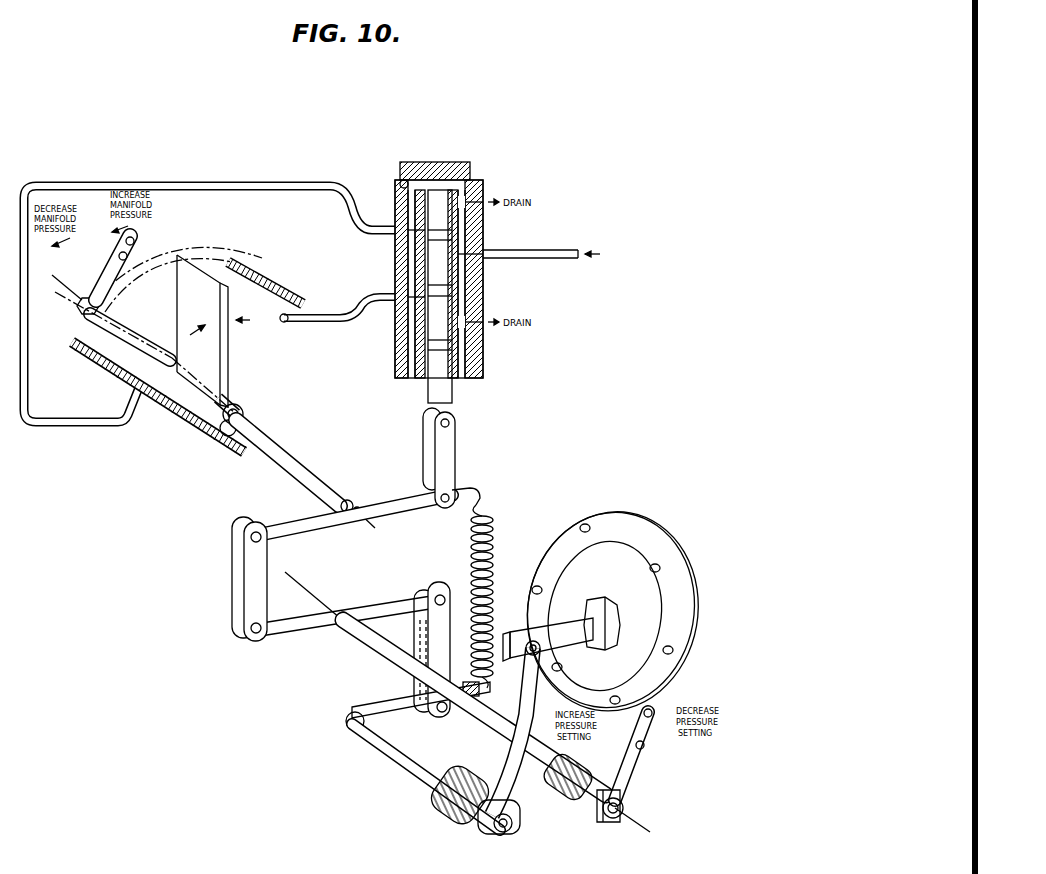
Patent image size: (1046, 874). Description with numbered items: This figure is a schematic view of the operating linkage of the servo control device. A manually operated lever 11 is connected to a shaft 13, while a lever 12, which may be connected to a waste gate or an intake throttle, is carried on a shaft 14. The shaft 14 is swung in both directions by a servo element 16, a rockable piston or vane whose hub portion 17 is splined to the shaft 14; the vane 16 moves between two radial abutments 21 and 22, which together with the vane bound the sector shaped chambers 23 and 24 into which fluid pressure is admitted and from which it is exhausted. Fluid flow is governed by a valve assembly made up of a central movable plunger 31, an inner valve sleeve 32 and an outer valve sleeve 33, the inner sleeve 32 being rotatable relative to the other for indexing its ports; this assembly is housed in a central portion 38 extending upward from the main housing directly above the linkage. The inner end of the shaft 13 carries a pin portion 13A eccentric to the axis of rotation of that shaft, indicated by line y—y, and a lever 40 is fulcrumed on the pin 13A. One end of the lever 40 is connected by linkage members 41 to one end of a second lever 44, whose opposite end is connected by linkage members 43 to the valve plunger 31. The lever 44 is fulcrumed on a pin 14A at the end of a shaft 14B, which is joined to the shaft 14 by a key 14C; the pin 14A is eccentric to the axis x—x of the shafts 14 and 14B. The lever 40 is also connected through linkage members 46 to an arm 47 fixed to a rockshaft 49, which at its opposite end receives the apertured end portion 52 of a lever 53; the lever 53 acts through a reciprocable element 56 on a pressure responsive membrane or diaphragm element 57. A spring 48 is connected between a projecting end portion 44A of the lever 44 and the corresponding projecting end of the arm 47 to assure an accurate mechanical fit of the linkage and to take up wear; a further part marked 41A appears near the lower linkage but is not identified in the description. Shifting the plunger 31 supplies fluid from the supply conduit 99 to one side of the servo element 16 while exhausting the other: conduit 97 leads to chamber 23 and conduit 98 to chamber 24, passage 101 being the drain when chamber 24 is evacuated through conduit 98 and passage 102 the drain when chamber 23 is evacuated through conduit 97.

The lever 11 is at (640, 748).
The lever 12 is at (106, 254).
The shaft 13 is at (488, 718).
The pin portion 13A is at (340, 620).
The shaft 14 is at (78, 307).
The pin 14A is at (352, 500).
The shaft 14B is at (310, 470).
The key 14C is at (232, 436).
The servo element 16 is at (226, 372).
The hub portion 17 is at (187, 385).
The radial abutment 21 is at (268, 356).
The radial abutment 22 is at (178, 404).
The sector shaped chamber 23 is at (238, 276).
The sector shaped chamber 24 is at (142, 283).
The valve plunger 31 is at (440, 388).
The inner valve sleeve 32 is at (408, 186).
The outer valve sleeve 33 is at (400, 184).
The central portion 38 is at (478, 182).
The lever 40 is at (290, 617).
The linkage members 41 is at (244, 580).
The stop 41A is at (452, 708).
The linkage members 43 is at (436, 450).
The second lever 44 is at (276, 526).
The projecting end portion 44A is at (472, 490).
The linkage members 46 is at (436, 596).
The arm 47 is at (380, 708).
The spring 48 is at (470, 555).
The rockshaft 49 is at (408, 760).
The apertured end portion 52 is at (507, 835).
The lever 53 is at (530, 790).
The reciprocable element 56 is at (565, 628).
The pressure responsive diaphragm element 57 is at (613, 611).
The conduit 97 is at (328, 314).
The conduit 98 is at (64, 423).
The supply conduit 99 is at (516, 252).
The exhaust passage 101 is at (471, 200).
The exhaust passage 102 is at (472, 324).